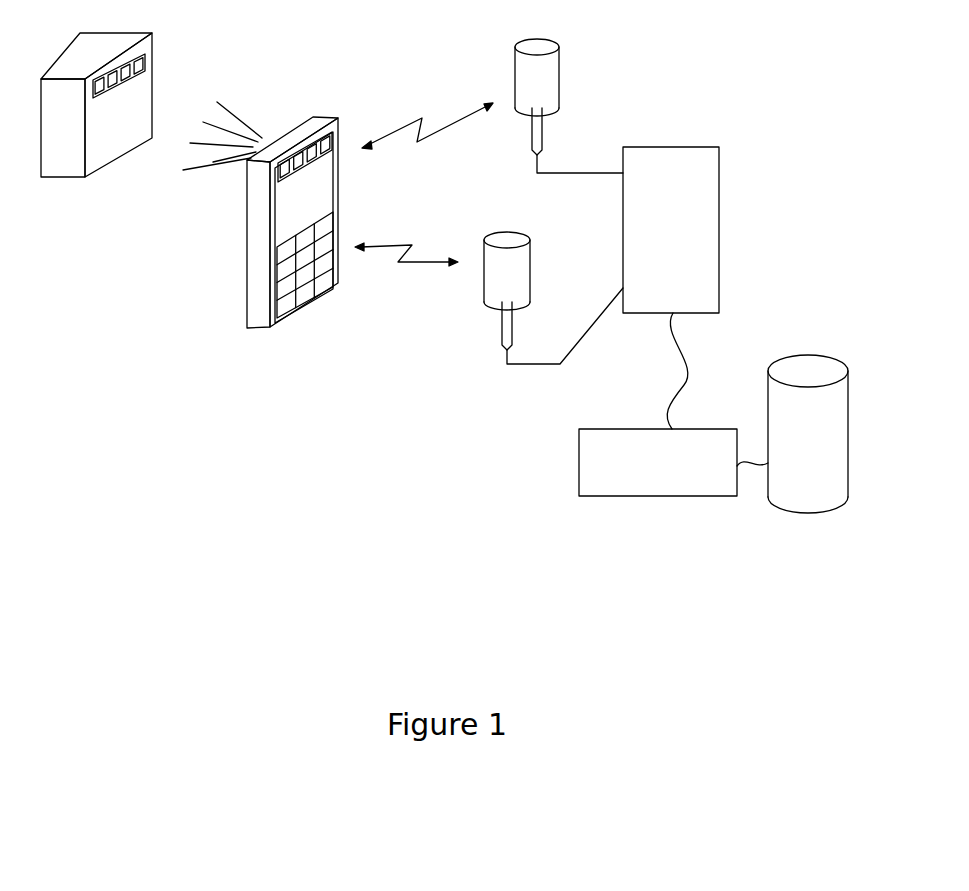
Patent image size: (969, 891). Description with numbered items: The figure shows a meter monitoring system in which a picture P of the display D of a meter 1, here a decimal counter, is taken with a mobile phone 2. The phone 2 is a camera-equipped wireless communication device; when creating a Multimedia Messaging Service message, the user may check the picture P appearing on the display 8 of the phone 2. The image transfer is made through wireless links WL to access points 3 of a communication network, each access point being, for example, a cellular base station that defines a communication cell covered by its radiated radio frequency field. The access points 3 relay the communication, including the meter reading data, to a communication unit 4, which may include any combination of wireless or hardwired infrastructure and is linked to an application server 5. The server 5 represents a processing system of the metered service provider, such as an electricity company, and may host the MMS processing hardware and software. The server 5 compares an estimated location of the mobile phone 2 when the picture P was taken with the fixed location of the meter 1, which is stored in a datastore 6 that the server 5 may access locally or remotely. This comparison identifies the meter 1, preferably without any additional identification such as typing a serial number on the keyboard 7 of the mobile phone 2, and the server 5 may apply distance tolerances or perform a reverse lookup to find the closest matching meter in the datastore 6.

The meter 1 is at (155, 68).
The display D is at (107, 98).
The mobile phone 2 is at (257, 270).
The access point 3 is at (550, 72).
The communication unit 4 is at (720, 198).
The server 5 is at (579, 473).
The datastore 6 is at (798, 515).
The keyboard 7 is at (305, 270).
The display 8 is at (277, 224).
The picture P is at (312, 186).
The wireless link WL is at (442, 127).